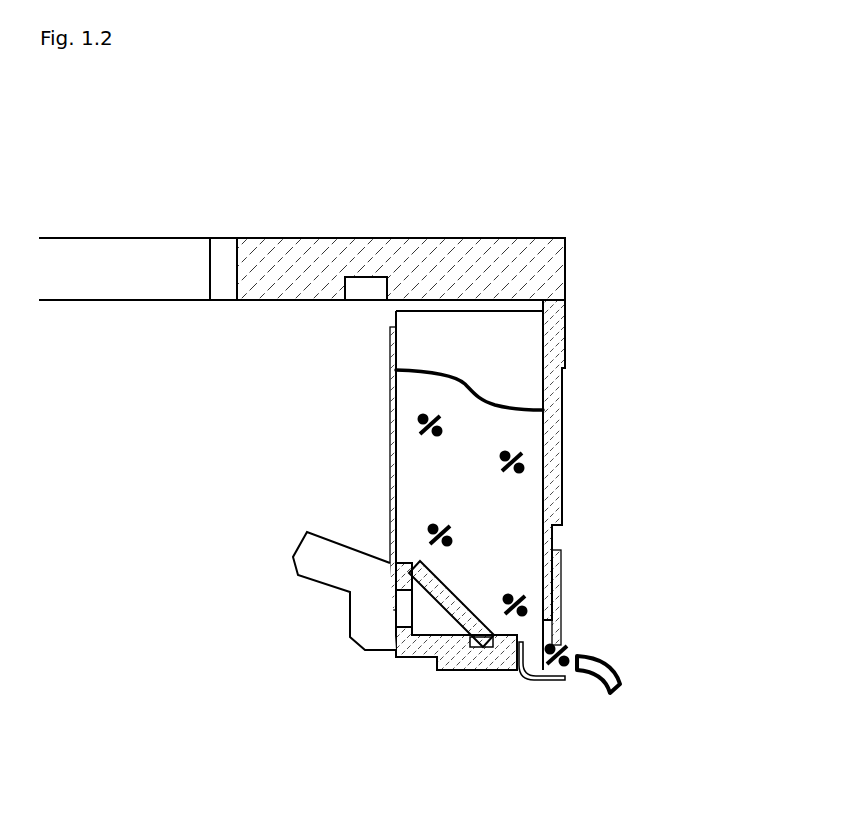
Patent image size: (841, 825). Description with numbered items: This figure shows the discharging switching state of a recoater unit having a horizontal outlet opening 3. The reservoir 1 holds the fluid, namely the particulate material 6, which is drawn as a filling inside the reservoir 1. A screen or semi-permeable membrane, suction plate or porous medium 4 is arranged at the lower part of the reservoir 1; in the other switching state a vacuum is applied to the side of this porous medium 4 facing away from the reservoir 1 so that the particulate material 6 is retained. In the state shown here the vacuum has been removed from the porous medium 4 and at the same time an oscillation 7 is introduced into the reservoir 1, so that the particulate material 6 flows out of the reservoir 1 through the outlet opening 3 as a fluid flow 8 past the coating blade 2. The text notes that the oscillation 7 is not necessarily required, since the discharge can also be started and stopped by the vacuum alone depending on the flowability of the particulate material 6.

The reservoir 1 is at (513, 519).
The coating blade 2 is at (568, 683).
The outlet opening 3 is at (572, 643).
The screen or semi-permeable membrane or suction plate or porous medium 4 is at (465, 602).
The fluid (particulate material) 6 is at (527, 462).
The oscillation 7 is at (451, 715).
The fluid flow (particulate material flow) 8 is at (612, 675).